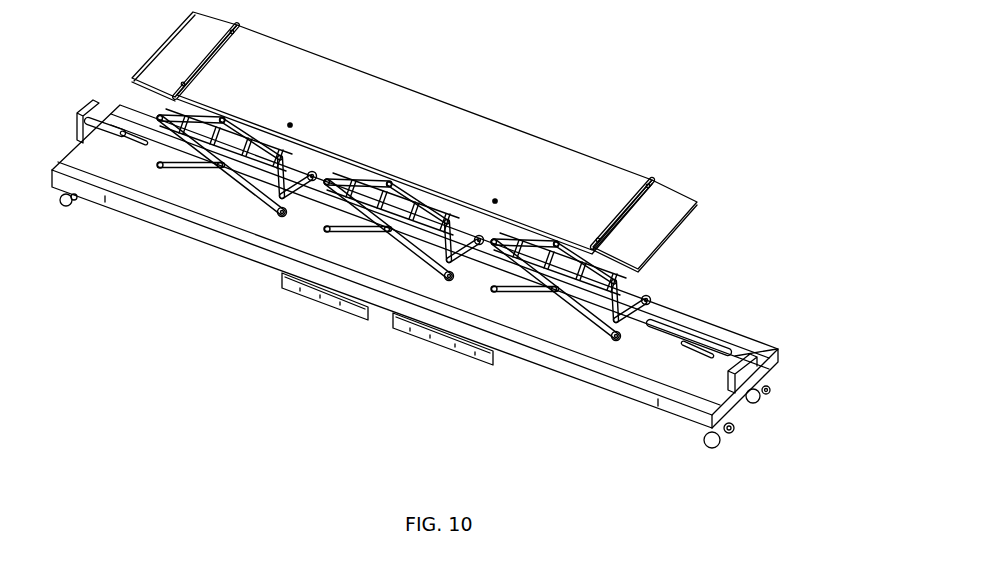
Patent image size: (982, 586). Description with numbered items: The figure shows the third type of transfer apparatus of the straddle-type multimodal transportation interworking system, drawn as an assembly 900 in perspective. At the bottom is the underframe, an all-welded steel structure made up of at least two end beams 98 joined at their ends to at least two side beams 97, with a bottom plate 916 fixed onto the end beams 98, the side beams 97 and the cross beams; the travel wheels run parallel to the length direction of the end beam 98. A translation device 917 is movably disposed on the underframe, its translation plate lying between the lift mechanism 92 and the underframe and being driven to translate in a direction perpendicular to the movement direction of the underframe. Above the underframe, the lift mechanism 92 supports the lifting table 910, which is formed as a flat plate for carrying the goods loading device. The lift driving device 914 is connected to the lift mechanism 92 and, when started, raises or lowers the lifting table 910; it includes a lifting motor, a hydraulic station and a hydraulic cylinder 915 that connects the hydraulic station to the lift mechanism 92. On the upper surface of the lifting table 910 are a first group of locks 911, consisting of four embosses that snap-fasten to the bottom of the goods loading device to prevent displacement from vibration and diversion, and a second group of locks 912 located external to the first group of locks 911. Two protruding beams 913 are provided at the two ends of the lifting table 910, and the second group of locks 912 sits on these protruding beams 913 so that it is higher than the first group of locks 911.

The lifting platform assembly 900 is at (588, 195).
The lifting table 910 is at (388, 118).
The first group of locks 911 is at (337, 75).
The second group of locks 912 is at (540, 150).
The protruding beams 913 is at (222, 42).
The lift driving device 914 is at (333, 302).
The hydraulic cylinder 915 is at (613, 292).
The bottom plate 916 is at (707, 333).
The translation device 917 is at (207, 193).
The lift mechanism 92 is at (176, 166).
The side beams 97 is at (532, 362).
The end beams 98 is at (762, 372).